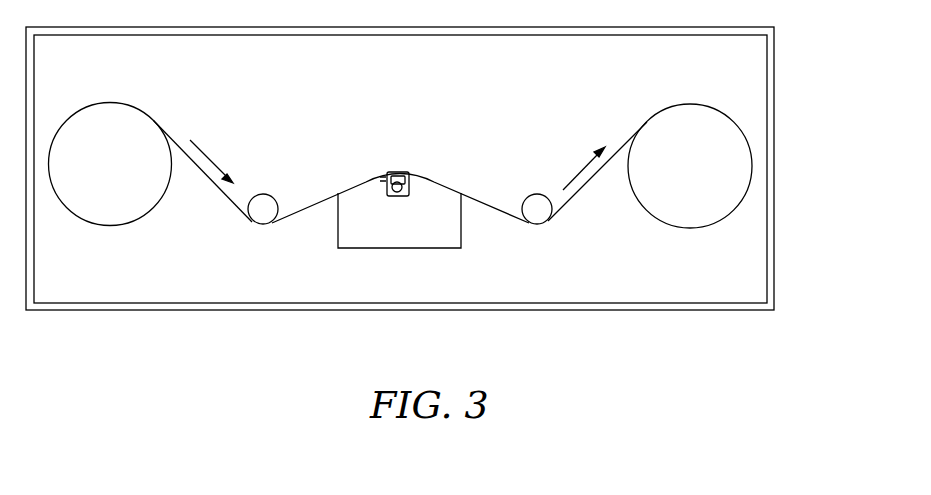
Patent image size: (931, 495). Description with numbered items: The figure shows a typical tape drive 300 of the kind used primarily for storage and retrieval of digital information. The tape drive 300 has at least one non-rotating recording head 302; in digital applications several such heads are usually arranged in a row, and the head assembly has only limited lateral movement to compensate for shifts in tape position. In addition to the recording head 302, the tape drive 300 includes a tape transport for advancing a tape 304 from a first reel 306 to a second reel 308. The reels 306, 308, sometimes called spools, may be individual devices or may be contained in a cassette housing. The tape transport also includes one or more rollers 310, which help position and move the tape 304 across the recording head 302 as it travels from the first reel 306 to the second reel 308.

The tape drive 300 is at (565, 343).
The recording head 302 is at (410, 143).
The tape 304 is at (310, 205).
The first reel 306 is at (134, 115).
The second reel 308 is at (675, 113).
The rollers 310 is at (261, 222).